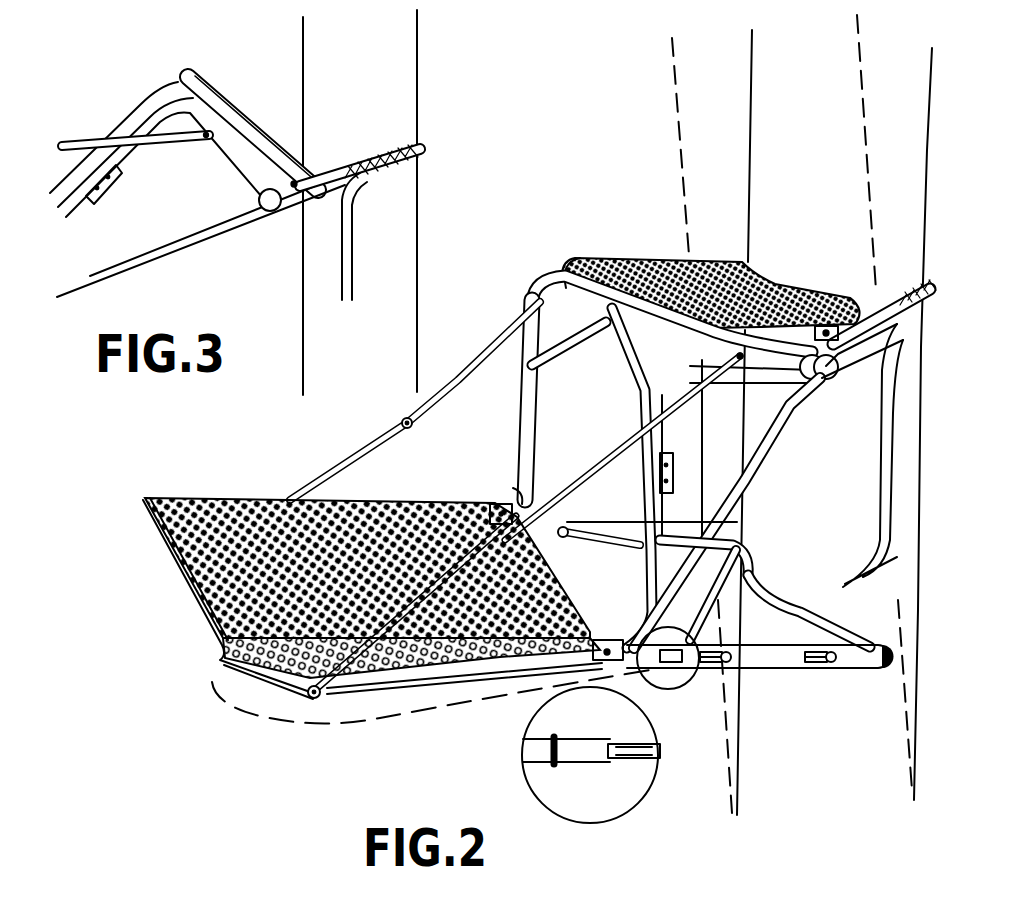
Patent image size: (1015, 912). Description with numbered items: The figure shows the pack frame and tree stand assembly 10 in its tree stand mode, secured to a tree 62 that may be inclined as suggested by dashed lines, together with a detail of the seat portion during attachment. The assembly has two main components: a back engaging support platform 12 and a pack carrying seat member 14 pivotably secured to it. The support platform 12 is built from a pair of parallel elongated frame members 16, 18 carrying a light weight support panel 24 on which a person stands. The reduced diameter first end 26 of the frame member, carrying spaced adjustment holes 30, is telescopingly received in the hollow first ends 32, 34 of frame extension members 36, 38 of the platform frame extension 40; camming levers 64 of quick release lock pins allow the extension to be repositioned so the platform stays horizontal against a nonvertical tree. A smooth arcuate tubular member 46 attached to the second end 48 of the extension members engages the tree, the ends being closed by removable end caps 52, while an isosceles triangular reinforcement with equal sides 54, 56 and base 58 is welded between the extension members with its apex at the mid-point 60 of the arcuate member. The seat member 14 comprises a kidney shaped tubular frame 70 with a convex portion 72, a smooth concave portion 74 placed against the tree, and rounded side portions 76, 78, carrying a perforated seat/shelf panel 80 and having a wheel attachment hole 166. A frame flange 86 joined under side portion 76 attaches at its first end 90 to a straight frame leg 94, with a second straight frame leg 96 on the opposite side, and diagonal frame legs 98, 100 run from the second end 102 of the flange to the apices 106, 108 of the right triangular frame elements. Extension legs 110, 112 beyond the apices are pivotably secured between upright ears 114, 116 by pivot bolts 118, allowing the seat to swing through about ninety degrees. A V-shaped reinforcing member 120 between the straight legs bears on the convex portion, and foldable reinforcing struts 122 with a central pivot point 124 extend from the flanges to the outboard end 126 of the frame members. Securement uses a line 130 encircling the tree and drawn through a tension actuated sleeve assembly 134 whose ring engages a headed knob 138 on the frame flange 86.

In FIG. 2, the pack frame and tree stand assembly 10 is at (952, 419).
In FIG. 2, the back engaging support platform 12 is at (446, 710).
In FIG. 2, the pack carrying seat member 14 is at (600, 246).
In FIG. 2, the elongated frame member 16 is at (545, 757).
In FIG. 2, the elongated frame member 18 is at (560, 538).
In FIG. 2, the support panel 24 is at (243, 500).
In FIG. 2, the first end of elongated frame member 26 is at (565, 760).
In FIG. 2, the adjustment holes 30 is at (600, 775).
In FIG. 2, the hollow first end of frame extension member 32 is at (640, 770).
In FIG. 2, the hollow first end of frame extension member 34 is at (576, 526).
In FIG. 2, the frame extension member 36 is at (770, 672).
In FIG. 2, the frame extension member 38 is at (668, 522).
In FIG. 2, the back engaging support platform frame extension 40 is at (750, 629).
In FIG. 2, the arcuate tubular member 46 is at (818, 612).
In FIG. 2, the second end of frame extension member 48 is at (878, 672).
In FIG. 2, the removable end caps 52 is at (890, 657).
In FIG. 2, the triangle side 54 is at (787, 626).
In FIG. 2, the triangle side 56 is at (737, 546).
In FIG. 2, the triangle base 58 is at (677, 616).
In FIG. 2, the mid-point of arcuate tubular member 60 is at (752, 568).
In FIG. 3, the tree 62 is at (405, 97).
In FIG. 2, the tree 62 is at (915, 135).
In FIG. 2, the camming levers 64 is at (805, 672).
In FIG. 2, the kidney shaped tubular frame member 70 is at (556, 270).
In FIG. 2, the convex portion 72 is at (541, 299).
In FIG. 2, the concave portion 74 is at (762, 298).
In FIG. 2, the rounded side portion 76 is at (756, 344).
In FIG. 2, the rounded side portion 78 is at (636, 257).
In FIG. 3, the seat/shelf panel 80 is at (230, 98).
In FIG. 2, the seat/shelf panel 80 is at (587, 261).
In FIG. 3, the frame flange 86 is at (232, 157).
In FIG. 2, the frame flange 86 is at (749, 386).
In FIG. 2, the first end of frame flange 90 is at (704, 392).
In FIG. 3, the straight frame leg 94 is at (68, 198).
In FIG. 2, the straight frame leg 94 is at (697, 450).
In FIG. 2, the straight frame leg 96 is at (517, 427).
In FIG. 3, the diagonal frame leg 98 is at (160, 260).
In FIG. 2, the diagonal frame leg 98 is at (758, 480).
In FIG. 2, the diagonal frame leg 100 is at (596, 415).
In FIG. 2, the second end of frame flange 102 is at (872, 350).
In FIG. 2, the apex of right triangular frame element 106 is at (606, 600).
In FIG. 2, the apex of right triangular frame element 108 is at (516, 483).
In FIG. 2, the extension leg 110 is at (600, 640).
In FIG. 2, the extension leg 112 is at (488, 503).
In FIG. 2, the upright ear 114 is at (585, 670).
In FIG. 2, the upright ear 116 is at (610, 640).
In FIG. 2, the pivot pins or bolts 118 is at (655, 690).
In FIG. 2, the V-shaped reinforcing member 120 is at (604, 338).
In FIG. 3, the foldable reinforcing strut 122 is at (94, 138).
In FIG. 2, the foldable reinforcing strut 122 is at (616, 462).
In FIG. 2, the central pivot point 124 is at (406, 416).
In FIG. 2, the lower or outboard end of elongated frame member 126 is at (273, 678).
In FIG. 3, the elongated rope or line 130 is at (352, 268).
In FIG. 2, the elongated rope or line 130 is at (882, 472).
In FIG. 3, the tension actuated sleeve assembly 134 is at (388, 157).
In FIG. 2, the tension actuated sleeve assembly 134 is at (920, 292).
In FIG. 3, the headed knob 138 is at (280, 212).
In FIG. 2, the headed knob 138 is at (836, 380).
In FIG. 2, the wheel attachment hole 166 is at (850, 322).